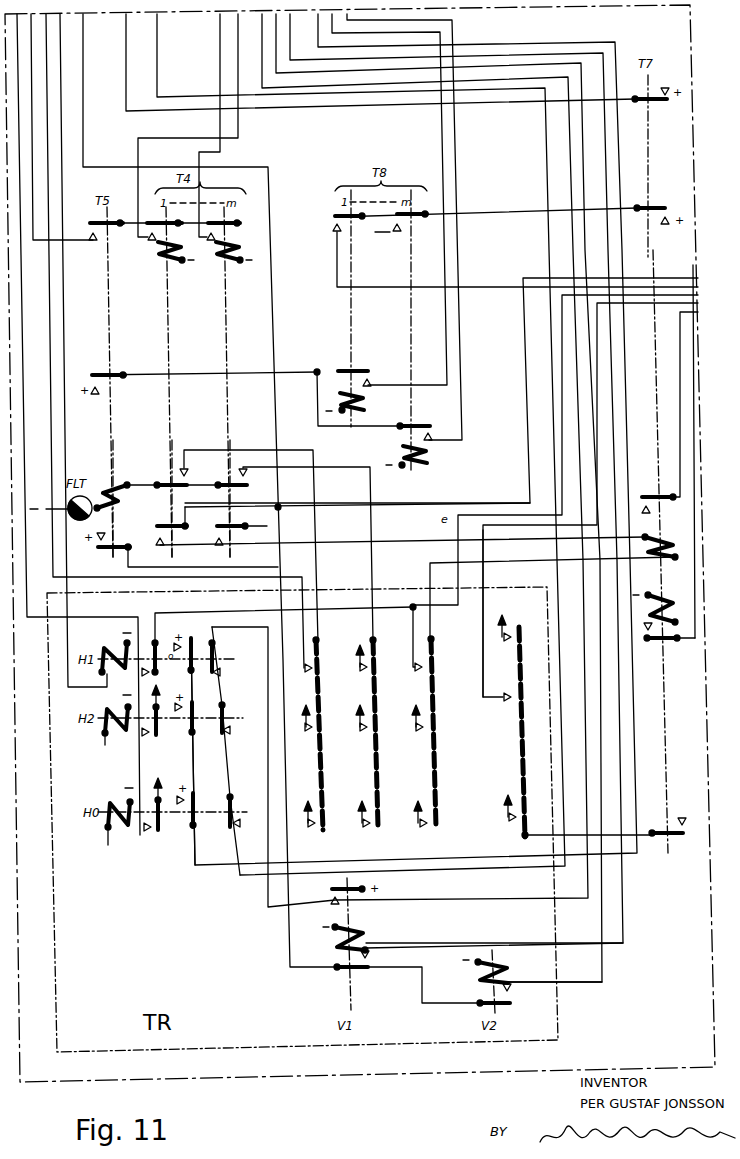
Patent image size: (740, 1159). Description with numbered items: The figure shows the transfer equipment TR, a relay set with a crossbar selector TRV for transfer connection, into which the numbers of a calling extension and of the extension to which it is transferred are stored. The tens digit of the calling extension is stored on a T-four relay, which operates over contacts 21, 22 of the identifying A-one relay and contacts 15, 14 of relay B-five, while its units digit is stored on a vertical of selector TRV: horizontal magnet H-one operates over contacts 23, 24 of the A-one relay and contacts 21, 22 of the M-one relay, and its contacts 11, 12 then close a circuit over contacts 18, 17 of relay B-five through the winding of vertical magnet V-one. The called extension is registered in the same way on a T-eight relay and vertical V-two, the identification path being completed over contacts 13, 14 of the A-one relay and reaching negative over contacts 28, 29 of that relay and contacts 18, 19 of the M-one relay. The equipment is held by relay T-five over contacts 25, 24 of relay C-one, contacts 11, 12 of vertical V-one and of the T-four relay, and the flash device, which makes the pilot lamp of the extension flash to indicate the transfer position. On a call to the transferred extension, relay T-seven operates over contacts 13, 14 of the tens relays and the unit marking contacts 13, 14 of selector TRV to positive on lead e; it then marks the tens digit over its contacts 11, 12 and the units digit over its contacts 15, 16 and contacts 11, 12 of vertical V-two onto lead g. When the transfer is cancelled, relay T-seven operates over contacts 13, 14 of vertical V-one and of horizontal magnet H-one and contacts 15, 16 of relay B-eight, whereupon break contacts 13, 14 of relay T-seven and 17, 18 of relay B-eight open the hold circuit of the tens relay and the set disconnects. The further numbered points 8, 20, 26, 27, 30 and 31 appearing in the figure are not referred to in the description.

The connection line 8 is at (476, 610).
The relay contact 11 is at (429, 519).
The relay contact 12 is at (397, 519).
The relay contact 13 is at (426, 375).
The relay contact 14 is at (413, 380).
The relay contact 15 is at (554, 555).
The relay contact 16 is at (515, 530).
The relay contact 17 is at (350, 423).
The relay contact 18 is at (357, 356).
The relay contact 19 is at (172, 342).
The bus conductor 20 is at (76, 349).
The relay contact 21 is at (275, 507).
The relay contact 22 is at (374, 61).
The relay contact 23 is at (354, 443).
The relay contact 24 is at (209, 126).
The relay contact 25 is at (188, 126).
The bus conductor 26 is at (400, 459).
The bus conductor 27 is at (433, 497).
The relay contact 28 is at (450, 477).
The relay contact 29 is at (414, 438).
The bus conductor 30 is at (383, 199).
The bus conductor 31 is at (398, 226).